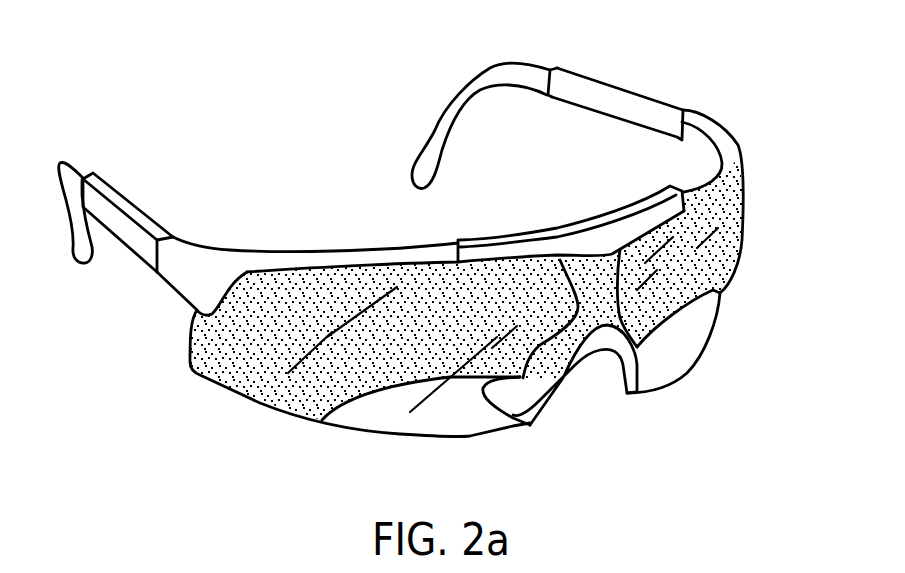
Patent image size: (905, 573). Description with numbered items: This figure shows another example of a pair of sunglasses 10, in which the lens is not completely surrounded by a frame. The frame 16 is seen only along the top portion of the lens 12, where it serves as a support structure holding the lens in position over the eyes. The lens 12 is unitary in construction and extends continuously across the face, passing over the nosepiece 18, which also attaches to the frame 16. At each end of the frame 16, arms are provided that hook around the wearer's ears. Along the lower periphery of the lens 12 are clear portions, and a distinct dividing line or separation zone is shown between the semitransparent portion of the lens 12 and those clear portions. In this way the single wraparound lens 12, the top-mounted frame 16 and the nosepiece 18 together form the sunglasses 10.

The sunglasses 10 is at (268, 95).
The lens 12 is at (720, 258).
The frame 16 is at (303, 250).
The nosepiece 18 is at (557, 370).